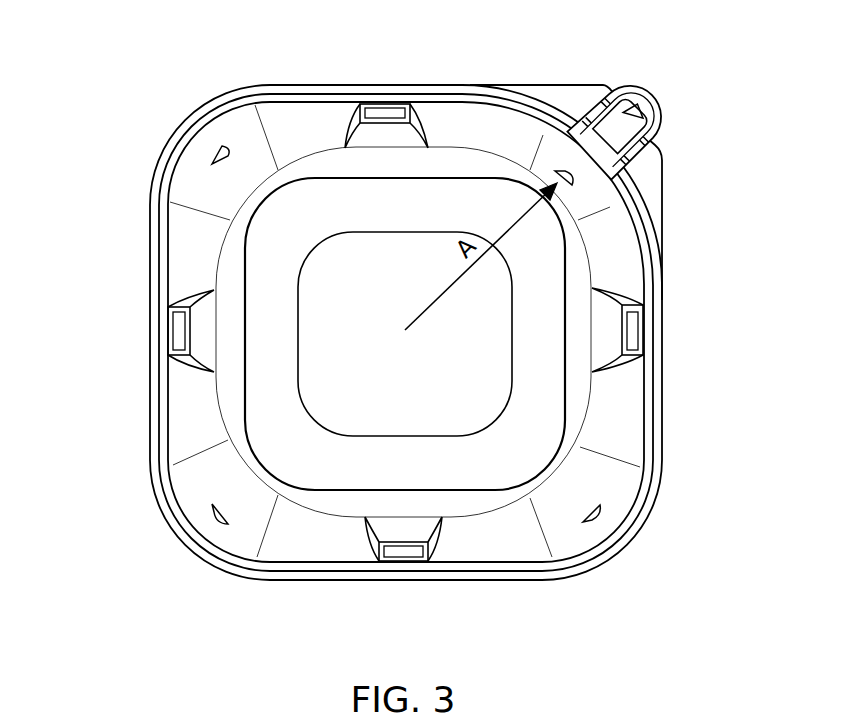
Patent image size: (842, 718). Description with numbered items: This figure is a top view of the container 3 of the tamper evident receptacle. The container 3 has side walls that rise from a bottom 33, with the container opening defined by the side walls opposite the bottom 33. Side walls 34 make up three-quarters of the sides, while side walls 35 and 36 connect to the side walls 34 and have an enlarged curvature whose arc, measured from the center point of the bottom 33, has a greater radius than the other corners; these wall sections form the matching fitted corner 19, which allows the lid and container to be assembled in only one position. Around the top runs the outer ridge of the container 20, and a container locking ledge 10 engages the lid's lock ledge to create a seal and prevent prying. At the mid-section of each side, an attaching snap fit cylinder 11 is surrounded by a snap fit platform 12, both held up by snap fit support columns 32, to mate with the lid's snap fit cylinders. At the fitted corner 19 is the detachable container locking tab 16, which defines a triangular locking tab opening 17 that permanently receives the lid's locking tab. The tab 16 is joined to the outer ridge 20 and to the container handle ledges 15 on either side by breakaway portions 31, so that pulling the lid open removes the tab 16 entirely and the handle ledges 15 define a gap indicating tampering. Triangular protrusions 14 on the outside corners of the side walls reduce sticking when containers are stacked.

The container 3 is at (401, 362).
The container locking ledge 10 is at (162, 271).
The attaching snap fit cylinder 11 is at (381, 112).
The snap fit platform 12 is at (401, 104).
The triangular protrusions 14 is at (218, 145).
The container handle ledges 15 is at (558, 93).
The detachable container locking tab 16 is at (659, 118).
The locking tab opening 17 is at (638, 110).
The matching fitted corner 19 is at (630, 200).
The outer ridge of the container 20 is at (156, 187).
The breakaway portions 31 is at (606, 96).
The snap fit support columns 32 is at (367, 138).
The bottom 33 is at (365, 325).
The side walls 34 is at (304, 134).
The side wall 35 is at (459, 134).
The side wall 36 is at (579, 209).